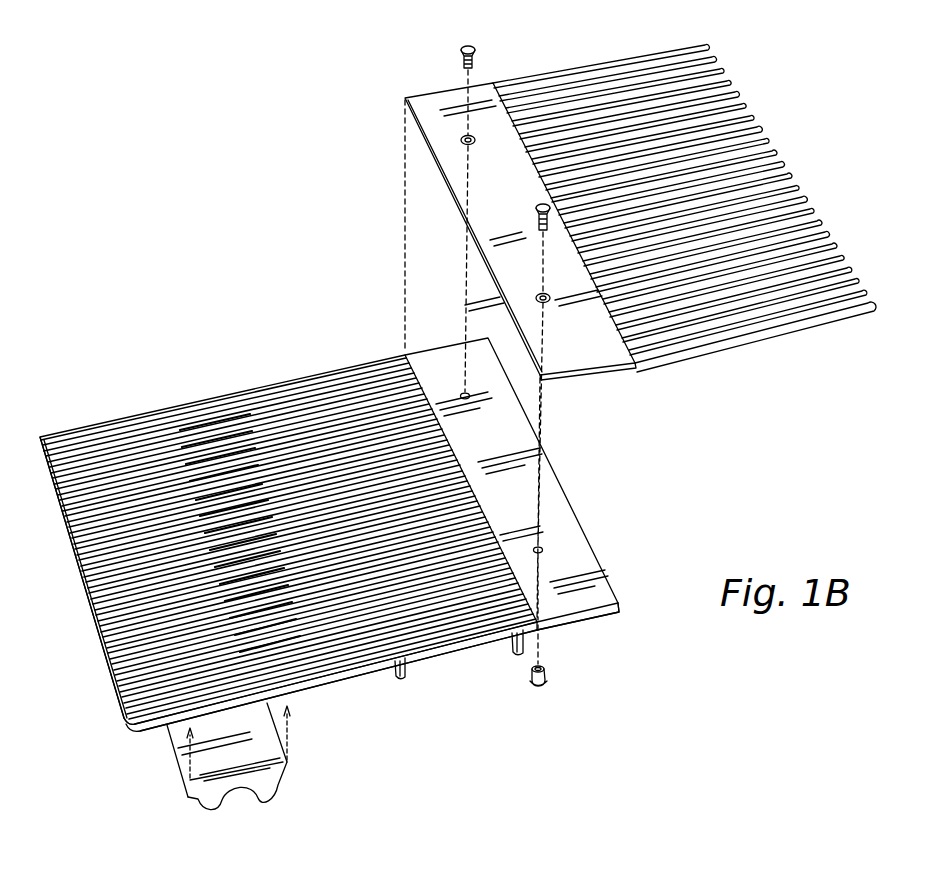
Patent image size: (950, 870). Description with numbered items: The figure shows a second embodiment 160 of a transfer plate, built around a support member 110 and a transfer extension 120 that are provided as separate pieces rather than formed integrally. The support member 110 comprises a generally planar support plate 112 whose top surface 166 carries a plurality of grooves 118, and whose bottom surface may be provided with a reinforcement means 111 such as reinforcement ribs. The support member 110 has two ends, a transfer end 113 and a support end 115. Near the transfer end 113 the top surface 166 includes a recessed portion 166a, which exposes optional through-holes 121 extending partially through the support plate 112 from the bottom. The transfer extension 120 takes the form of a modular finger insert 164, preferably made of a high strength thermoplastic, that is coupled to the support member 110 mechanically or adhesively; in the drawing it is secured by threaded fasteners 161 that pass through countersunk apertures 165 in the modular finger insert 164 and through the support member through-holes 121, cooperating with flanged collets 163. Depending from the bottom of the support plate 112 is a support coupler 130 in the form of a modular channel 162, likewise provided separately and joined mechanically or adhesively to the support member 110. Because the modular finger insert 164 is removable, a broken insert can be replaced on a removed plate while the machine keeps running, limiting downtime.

The support member 110 is at (317, 450).
The reinforcement means 111 is at (317, 684).
The support plate 112 is at (103, 587).
The transfer end 113 is at (613, 642).
The support end 115 is at (92, 673).
The grooves 118 is at (408, 607).
The transfer extension 120 is at (614, 195).
The through-holes 121 is at (462, 393).
The support coupler 130 is at (235, 800).
The second embodiment 160 is at (92, 400).
The threaded fasteners 161 is at (460, 54).
The modular channel 162 is at (227, 742).
The flanged collets 163 is at (548, 671).
The modular finger insert 164 is at (495, 170).
The countersunk apertures 165 is at (460, 140).
The top surface 166 is at (318, 535).
The recessed portion 166a is at (547, 488).